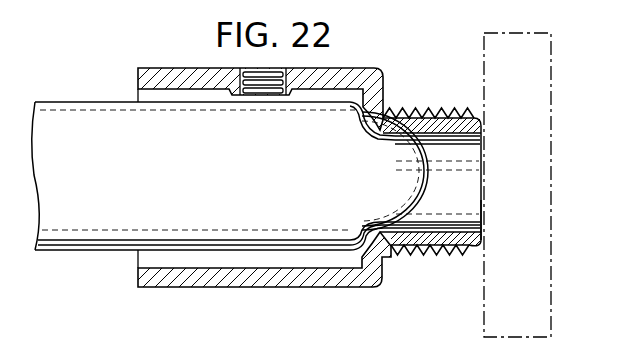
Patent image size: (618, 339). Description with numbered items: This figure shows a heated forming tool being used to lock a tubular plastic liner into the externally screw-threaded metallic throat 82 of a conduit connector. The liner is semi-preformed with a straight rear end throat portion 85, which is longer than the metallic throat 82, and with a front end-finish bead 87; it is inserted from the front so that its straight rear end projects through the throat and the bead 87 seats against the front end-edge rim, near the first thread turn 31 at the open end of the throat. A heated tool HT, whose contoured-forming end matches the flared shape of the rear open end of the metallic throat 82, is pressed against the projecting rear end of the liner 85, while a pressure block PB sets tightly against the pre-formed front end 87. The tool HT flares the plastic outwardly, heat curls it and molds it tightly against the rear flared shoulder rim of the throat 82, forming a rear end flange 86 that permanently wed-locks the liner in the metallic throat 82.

The first thread turn 31 is at (470, 108).
The metallic throat 82 is at (450, 253).
The straight rear end throat portion 85 is at (443, 206).
The rear end flange 86 is at (364, 126).
The front end-finish bead 87 is at (481, 248).
The heated tool HT is at (208, 176).
The pressure block PB is at (552, 180).